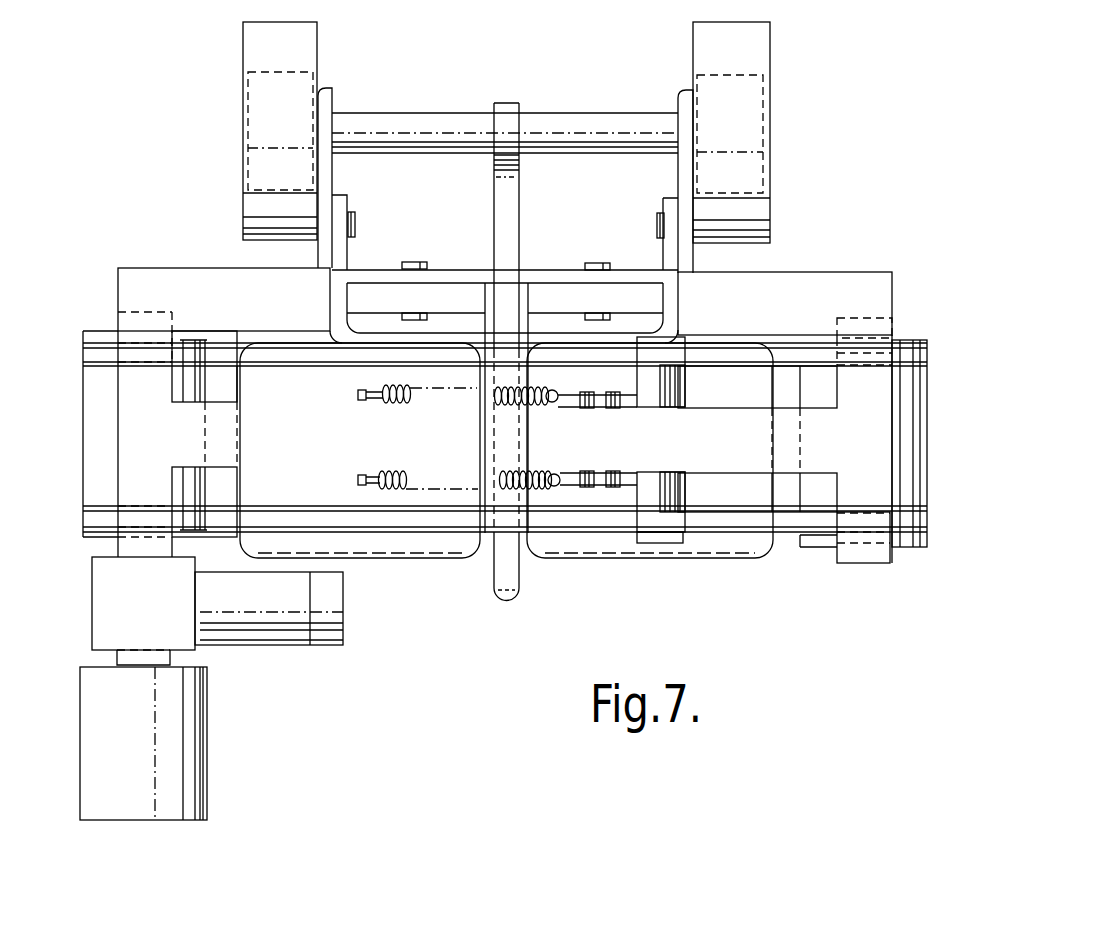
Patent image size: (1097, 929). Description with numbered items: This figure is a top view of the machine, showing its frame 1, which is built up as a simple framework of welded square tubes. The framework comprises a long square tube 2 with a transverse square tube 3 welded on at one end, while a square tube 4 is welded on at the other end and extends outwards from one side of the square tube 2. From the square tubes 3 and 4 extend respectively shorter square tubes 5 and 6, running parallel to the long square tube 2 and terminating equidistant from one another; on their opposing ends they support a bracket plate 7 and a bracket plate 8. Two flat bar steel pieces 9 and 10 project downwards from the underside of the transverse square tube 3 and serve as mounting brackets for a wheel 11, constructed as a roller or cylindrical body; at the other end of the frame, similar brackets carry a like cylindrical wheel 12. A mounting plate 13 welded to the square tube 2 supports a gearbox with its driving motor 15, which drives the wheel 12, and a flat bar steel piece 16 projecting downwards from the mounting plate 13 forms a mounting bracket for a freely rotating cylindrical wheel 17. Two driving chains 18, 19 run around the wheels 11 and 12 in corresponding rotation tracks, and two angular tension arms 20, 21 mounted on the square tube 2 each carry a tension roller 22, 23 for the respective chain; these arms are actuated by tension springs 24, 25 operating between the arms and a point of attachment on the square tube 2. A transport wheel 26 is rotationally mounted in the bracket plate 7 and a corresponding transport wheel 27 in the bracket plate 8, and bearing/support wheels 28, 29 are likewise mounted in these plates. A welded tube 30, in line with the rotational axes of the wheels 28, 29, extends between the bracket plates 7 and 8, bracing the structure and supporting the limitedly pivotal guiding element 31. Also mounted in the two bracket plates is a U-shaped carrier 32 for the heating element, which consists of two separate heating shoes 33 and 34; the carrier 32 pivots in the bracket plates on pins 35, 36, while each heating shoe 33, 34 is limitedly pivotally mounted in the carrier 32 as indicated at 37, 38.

The frame 1 is at (133, 262).
The square tube 2 is at (646, 455).
The transverse square tube 3 is at (863, 377).
The square tube 4 is at (148, 372).
The shorter square tube 5 is at (818, 290).
The shorter square tube 6 is at (200, 272).
The bracket plate 7 is at (327, 97).
The bracket plate 8 is at (682, 94).
The flat bar steel piece 9 is at (863, 557).
The flat bar steel piece 10 is at (855, 318).
The wheel 11 is at (820, 490).
The wheel 12 is at (188, 387).
The mounting plate 13 is at (165, 615).
The driving motor 15 is at (290, 620).
The flat bar steel piece 16 is at (143, 660).
The wheel 17 is at (183, 730).
The driving chain 18 is at (727, 520).
The driving chain 19 is at (787, 360).
The tension arm 20 is at (567, 477).
The tension arm 21 is at (567, 404).
The tension roller 22 is at (667, 544).
The tension roller 23 is at (685, 380).
The tension spring 24 is at (398, 473).
The tension spring 25 is at (408, 406).
The transport wheel 26 is at (753, 52).
The transport wheel 27 is at (243, 44).
The bearing/support wheel 28 is at (745, 108).
The bearing/support wheel 29 is at (248, 105).
The tube 30 is at (567, 124).
The guiding element 31 is at (522, 239).
The U-shaped carrier 32 is at (456, 271).
The heating shoe 33 is at (433, 545).
The heating shoe 34 is at (612, 545).
The pin 35 is at (657, 220).
The pin 36 is at (357, 217).
The pivotal mounting 37 is at (413, 262).
The pivotal mounting 38 is at (597, 262).